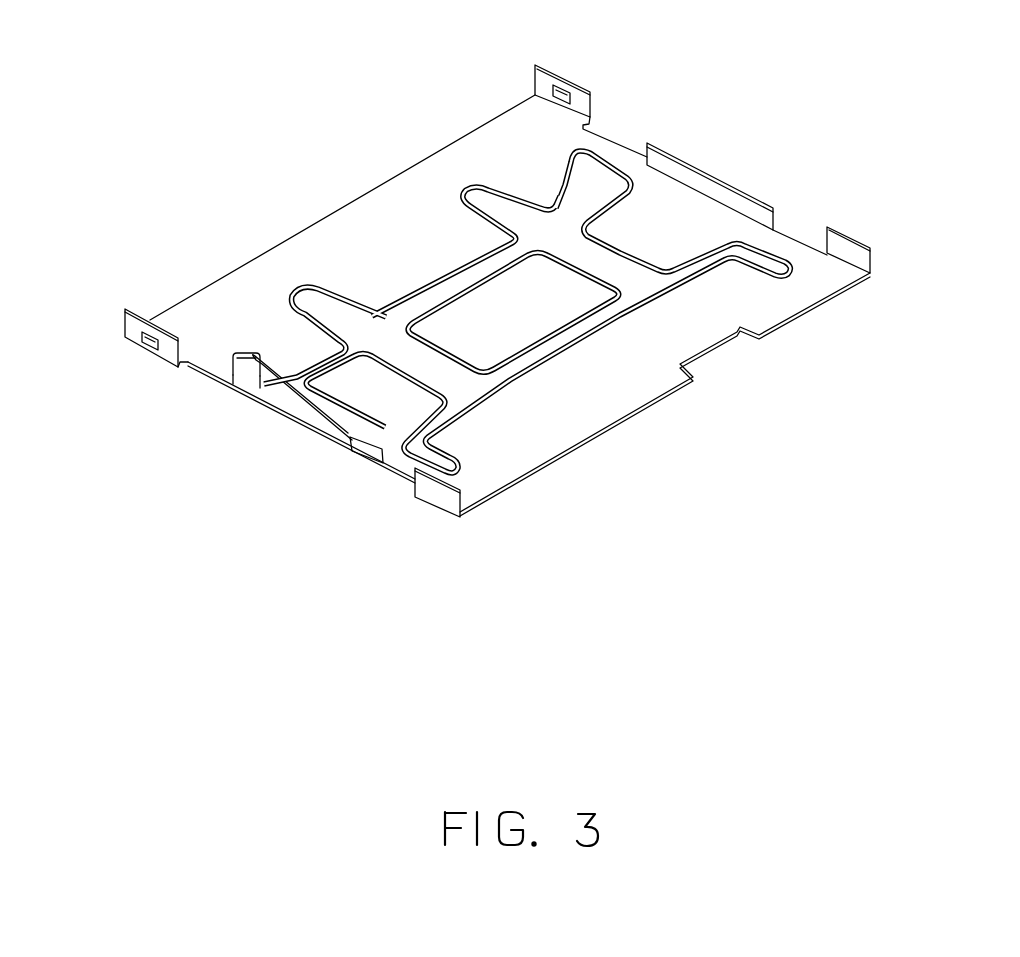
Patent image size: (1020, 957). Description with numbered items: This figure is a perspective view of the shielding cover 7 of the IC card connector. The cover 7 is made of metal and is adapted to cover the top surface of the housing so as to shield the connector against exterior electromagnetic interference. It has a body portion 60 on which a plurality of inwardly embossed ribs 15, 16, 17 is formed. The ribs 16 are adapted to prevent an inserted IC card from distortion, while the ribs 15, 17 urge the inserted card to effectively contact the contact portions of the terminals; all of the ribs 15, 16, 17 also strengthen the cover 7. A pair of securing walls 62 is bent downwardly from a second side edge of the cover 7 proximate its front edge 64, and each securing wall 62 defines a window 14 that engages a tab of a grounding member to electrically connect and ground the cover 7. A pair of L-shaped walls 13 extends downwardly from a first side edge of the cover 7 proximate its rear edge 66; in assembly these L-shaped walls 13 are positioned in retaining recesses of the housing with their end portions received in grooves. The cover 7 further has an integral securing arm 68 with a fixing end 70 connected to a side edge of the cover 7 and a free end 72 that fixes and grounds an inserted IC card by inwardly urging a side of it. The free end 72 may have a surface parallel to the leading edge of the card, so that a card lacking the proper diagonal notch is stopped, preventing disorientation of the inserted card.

The shielding cover 7 is at (256, 91).
The body portion 60 is at (524, 452).
The securing walls 62 is at (537, 64).
The window 14 is at (535, 90).
The front edge 64 is at (181, 302).
The rear edge 66 is at (601, 432).
The L-shaped walls 13 is at (873, 249).
The ribs 15 is at (480, 191).
The ribs 16 is at (590, 152).
The ribs 17 is at (468, 276).
The securing arm 68 is at (330, 432).
The fixing end 70 is at (373, 455).
The free end 72 is at (243, 371).